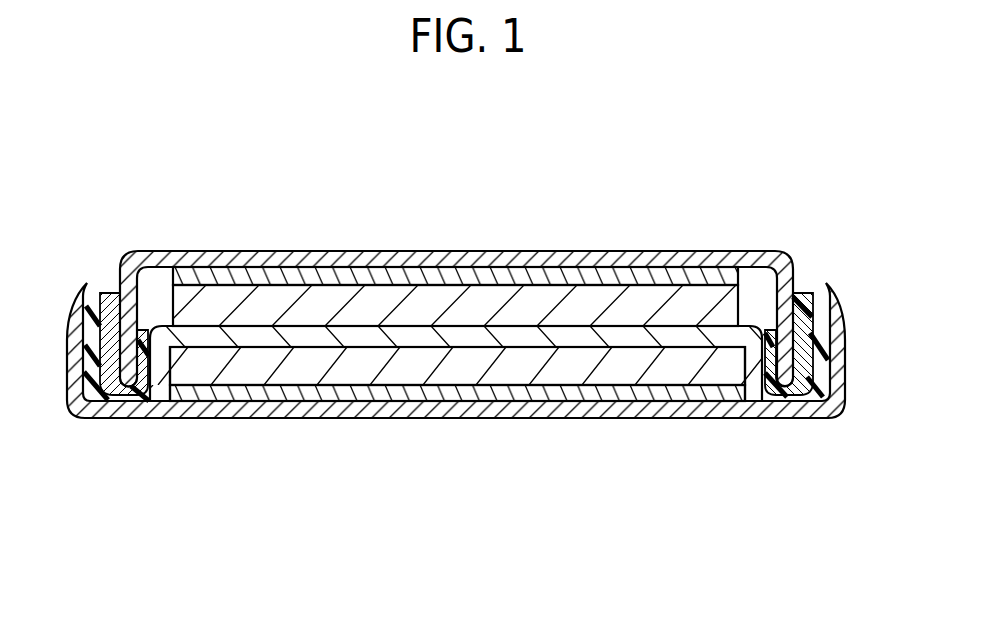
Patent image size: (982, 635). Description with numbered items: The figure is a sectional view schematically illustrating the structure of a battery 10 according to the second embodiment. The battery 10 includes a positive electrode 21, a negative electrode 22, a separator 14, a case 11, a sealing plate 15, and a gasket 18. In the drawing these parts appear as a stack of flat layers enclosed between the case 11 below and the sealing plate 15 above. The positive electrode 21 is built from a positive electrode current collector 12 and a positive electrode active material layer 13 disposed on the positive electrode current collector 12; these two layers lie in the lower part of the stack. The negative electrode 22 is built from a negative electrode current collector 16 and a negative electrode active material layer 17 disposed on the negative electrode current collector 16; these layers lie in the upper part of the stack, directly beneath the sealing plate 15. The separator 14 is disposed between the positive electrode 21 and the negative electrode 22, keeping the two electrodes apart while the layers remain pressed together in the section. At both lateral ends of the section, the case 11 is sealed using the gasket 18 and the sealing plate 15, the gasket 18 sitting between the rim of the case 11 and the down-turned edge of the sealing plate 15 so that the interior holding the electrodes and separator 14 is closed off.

The battery 10 is at (723, 141).
The case 11 is at (214, 408).
The positive electrode current collector 12 is at (403, 393).
The positive electrode active material layer 13 is at (596, 370).
The separator 14 is at (673, 337).
The sealing plate 15 is at (191, 258).
The negative electrode current collector 16 is at (535, 278).
The negative electrode active material layer 17 is at (340, 305).
The gasket 18 is at (806, 396).
The positive electrode 21 is at (547, 548).
The negative electrode 22 is at (515, 157).